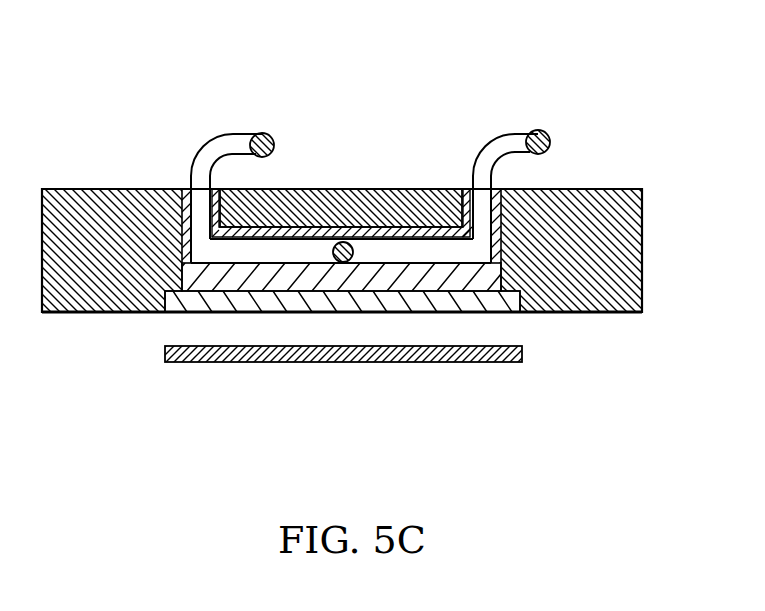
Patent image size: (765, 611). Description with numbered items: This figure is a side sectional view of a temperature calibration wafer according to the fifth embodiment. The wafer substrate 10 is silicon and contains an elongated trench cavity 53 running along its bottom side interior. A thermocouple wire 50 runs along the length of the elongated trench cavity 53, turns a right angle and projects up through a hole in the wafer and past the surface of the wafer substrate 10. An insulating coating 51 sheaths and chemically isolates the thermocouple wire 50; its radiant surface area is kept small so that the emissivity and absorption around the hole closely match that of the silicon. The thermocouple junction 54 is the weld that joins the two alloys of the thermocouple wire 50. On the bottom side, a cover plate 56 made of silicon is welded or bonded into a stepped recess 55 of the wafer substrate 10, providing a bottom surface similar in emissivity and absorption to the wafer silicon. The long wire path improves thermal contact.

The wafer substrate 10 is at (620, 188).
The thermocouple wire 50 is at (229, 134).
The insulating coating 51 is at (497, 188).
The elongated trench cavity 53 is at (218, 266).
The thermocouple junction 54 is at (353, 242).
The stepped recess 55 is at (488, 305).
The cover plate 56 is at (380, 362).